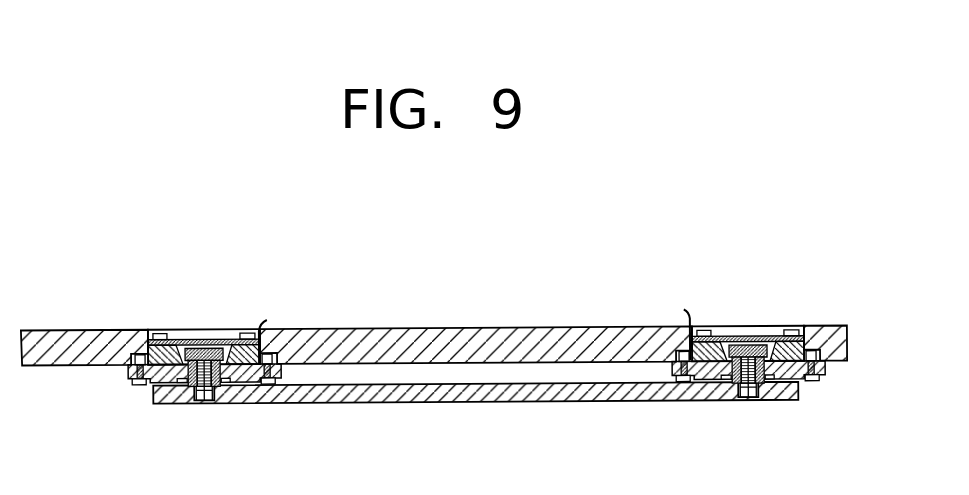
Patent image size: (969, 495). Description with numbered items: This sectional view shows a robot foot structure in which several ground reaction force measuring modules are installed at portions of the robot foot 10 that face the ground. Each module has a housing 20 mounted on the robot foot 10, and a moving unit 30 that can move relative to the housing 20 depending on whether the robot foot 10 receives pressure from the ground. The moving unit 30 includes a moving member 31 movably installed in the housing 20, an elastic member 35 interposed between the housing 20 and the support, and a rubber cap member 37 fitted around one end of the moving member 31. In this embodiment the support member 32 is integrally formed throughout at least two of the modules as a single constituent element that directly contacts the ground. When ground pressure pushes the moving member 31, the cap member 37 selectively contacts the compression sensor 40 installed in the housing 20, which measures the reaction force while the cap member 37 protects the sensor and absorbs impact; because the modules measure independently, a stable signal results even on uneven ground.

The robot foot 10 is at (604, 329).
The housing 20 is at (744, 401).
The moving unit 30 is at (777, 359).
The moving member 31 is at (751, 305).
The support member 32 is at (778, 401).
The elastic member 35 is at (743, 414).
The cap member 37 is at (747, 298).
The compression sensor 40 is at (690, 320).